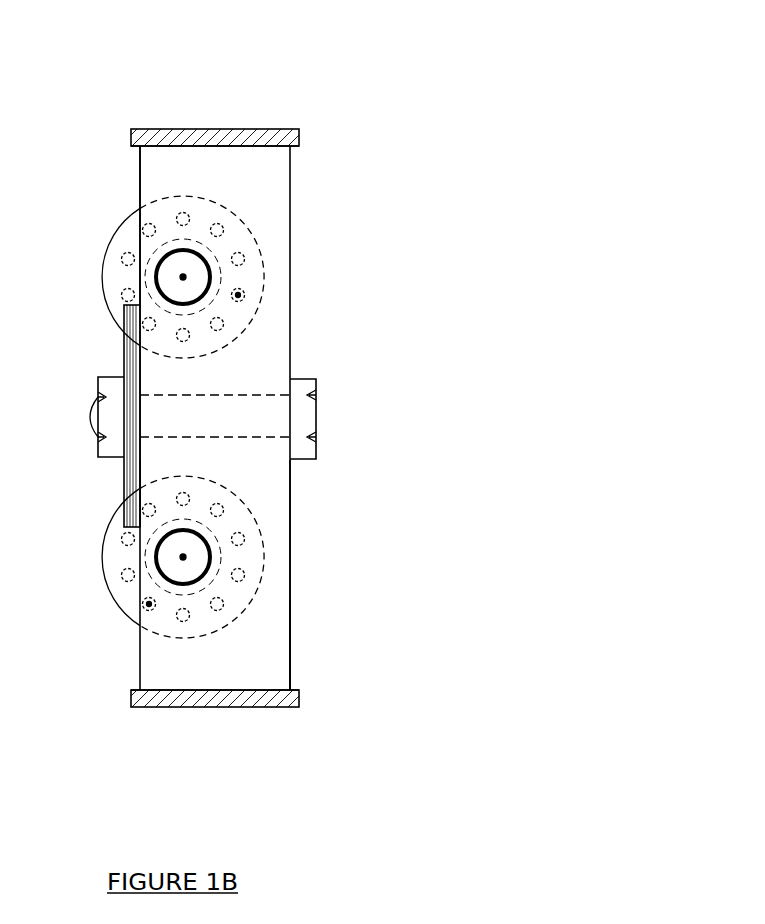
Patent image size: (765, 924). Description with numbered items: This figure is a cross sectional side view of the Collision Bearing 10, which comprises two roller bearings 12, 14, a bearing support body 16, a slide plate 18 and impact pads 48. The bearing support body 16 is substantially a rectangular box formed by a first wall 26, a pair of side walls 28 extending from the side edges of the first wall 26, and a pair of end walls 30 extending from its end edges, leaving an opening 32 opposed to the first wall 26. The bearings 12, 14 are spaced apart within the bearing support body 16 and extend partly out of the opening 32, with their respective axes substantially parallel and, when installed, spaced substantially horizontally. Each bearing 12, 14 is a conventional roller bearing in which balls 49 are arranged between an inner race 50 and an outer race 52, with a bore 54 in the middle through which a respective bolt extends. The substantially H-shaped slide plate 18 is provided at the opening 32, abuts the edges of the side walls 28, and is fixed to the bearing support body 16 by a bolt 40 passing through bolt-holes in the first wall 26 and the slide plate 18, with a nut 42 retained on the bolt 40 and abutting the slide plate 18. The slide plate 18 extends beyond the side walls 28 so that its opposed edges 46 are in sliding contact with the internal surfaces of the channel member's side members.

The Collision Bearing 10 is at (362, 100).
The roller bearing 12 is at (265, 563).
The roller bearing 14 is at (262, 296).
The bearing support body 16 is at (327, 653).
The slide plate 18 is at (127, 490).
The first wall 26 is at (292, 598).
The side walls 28 is at (158, 173).
The end walls 30 is at (275, 143).
The opening 32 is at (127, 194).
The bolt 40 is at (303, 416).
The nut 42 is at (113, 443).
The opposed edges 46 is at (132, 366).
The impact pads 48 is at (208, 127).
The balls 49 is at (238, 295).
The inner race 50 is at (162, 255).
The outer race 52 is at (245, 243).
The bore 54 is at (173, 284).